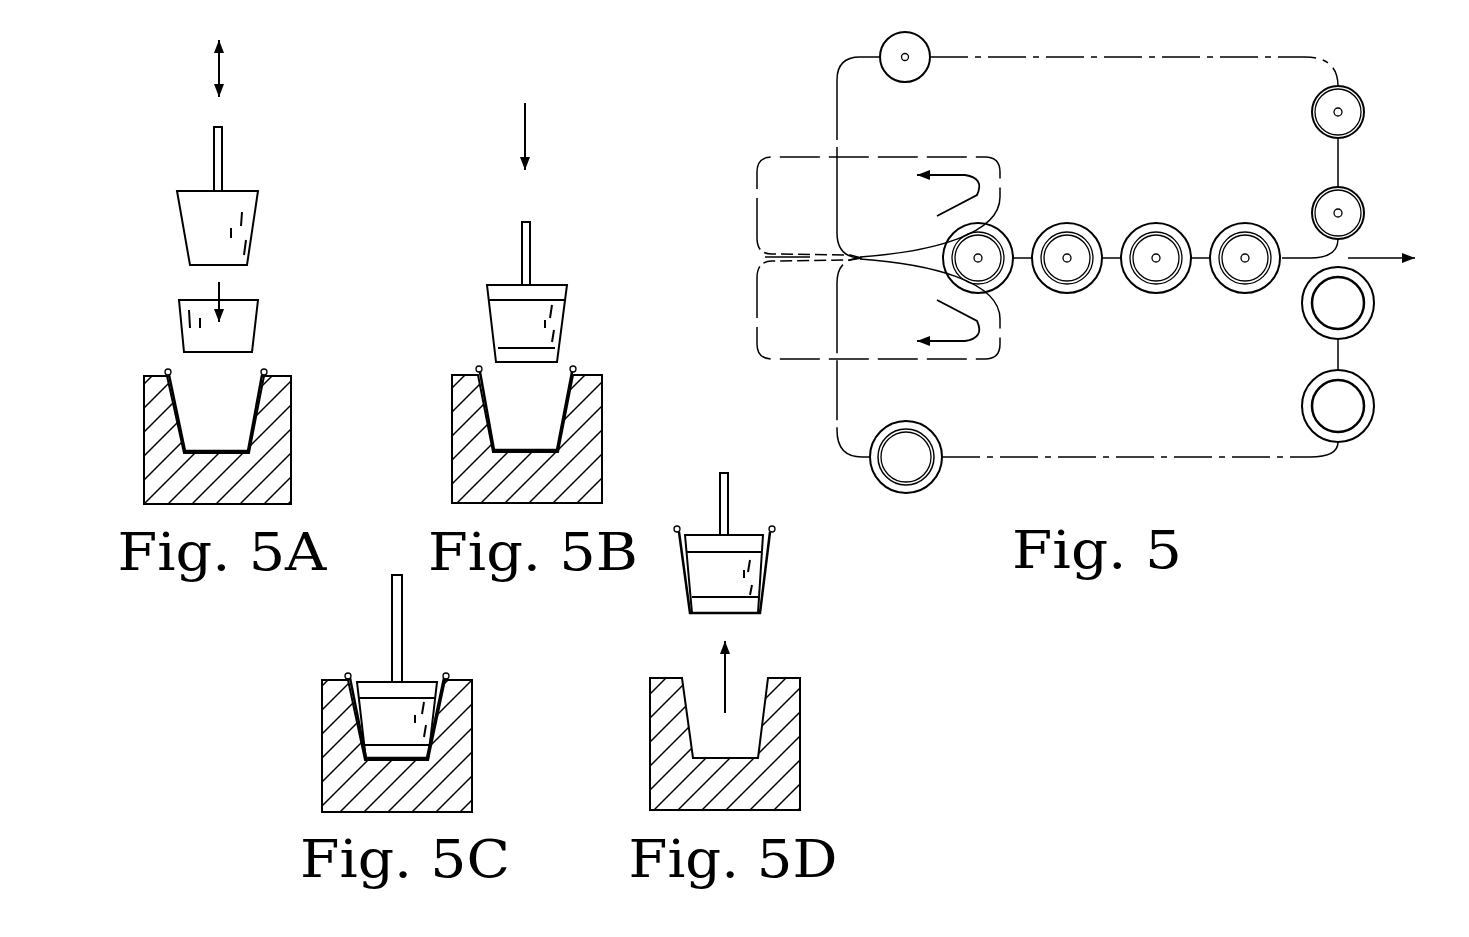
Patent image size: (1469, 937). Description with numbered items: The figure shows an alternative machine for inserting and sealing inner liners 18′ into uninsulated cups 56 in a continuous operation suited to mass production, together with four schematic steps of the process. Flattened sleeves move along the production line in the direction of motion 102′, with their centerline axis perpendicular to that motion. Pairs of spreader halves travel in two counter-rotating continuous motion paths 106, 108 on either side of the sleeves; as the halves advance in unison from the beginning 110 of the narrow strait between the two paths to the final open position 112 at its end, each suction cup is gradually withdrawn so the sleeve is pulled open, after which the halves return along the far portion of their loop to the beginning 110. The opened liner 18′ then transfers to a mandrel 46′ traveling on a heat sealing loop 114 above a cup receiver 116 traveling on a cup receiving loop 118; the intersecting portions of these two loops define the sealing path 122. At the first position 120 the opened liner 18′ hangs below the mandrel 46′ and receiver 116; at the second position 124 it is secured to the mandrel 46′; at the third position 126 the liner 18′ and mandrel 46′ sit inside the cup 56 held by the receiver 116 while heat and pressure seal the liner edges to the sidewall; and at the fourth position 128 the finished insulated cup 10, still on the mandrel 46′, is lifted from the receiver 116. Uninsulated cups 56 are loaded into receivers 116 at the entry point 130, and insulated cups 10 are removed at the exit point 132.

In FIG. 5D, the insulated cup 10 is at (781, 577).
In FIG. 5, the insulated cup 10 is at (1355, 138).
In FIG. 5A, the inner liner 18′ is at (246, 320).
In FIG. 5B, the inner liner 18′ is at (510, 322).
In FIG. 5C, the inner liner 18′ is at (430, 728).
In FIG. 5D, the inner liner 18′ is at (698, 575).
In FIG. 5A, the mandrel 46′ is at (257, 228).
In FIG. 5B, the mandrel 46′ is at (548, 284).
In FIG. 5C, the mandrel 46′ is at (412, 690).
In FIG. 5D, the mandrel 46′ is at (705, 545).
In FIG. 5, the mandrel 46′ is at (921, 49).
In FIG. 5A, the uninsulated cup 56 is at (266, 371).
In FIG. 5B, the uninsulated cup 56 is at (575, 367).
In FIG. 5C, the uninsulated cup 56 is at (352, 677).
In FIG. 5, the uninsulated cup 56 is at (884, 479).
In FIG. 5, the production line motion 102′ is at (1377, 255).
In FIG. 5, the continuous motion path 106 is at (893, 157).
In FIG. 5, the continuous motion path 108 is at (878, 360).
In FIG. 5, the beginning of the narrow strait 110 is at (767, 254).
In FIG. 5, the final open position 112 is at (941, 238).
In FIG. 5, the heat sealing loop 114 is at (1046, 58).
In FIG. 5A, the cup receiver 116 is at (281, 473).
In FIG. 5B, the cup receiver 116 is at (527, 439).
In FIG. 5D, the cup receiver 116 is at (778, 766).
In FIG. 5, the cup receiver 116 is at (1362, 325).
In FIG. 5, the cup receiving loop 118 is at (1117, 456).
In FIG. 5, the first position 120 is at (1014, 292).
In FIG. 5A, the sealing path 122 is at (326, 172).
In FIG. 5, the sealing path 122 is at (1023, 253).
In FIG. 5B, the second position 124 is at (612, 196).
In FIG. 5, the second position 124 is at (1092, 300).
In FIG. 5C, the third position 126 is at (290, 706).
In FIG. 5, the third position 126 is at (1173, 300).
In FIG. 5D, the fourth position 128 is at (866, 683).
In FIG. 5, the fourth position 128 is at (1236, 300).
In FIG. 5, the entry point 130 is at (940, 421).
In FIG. 5, the exit point 132 is at (1300, 120).